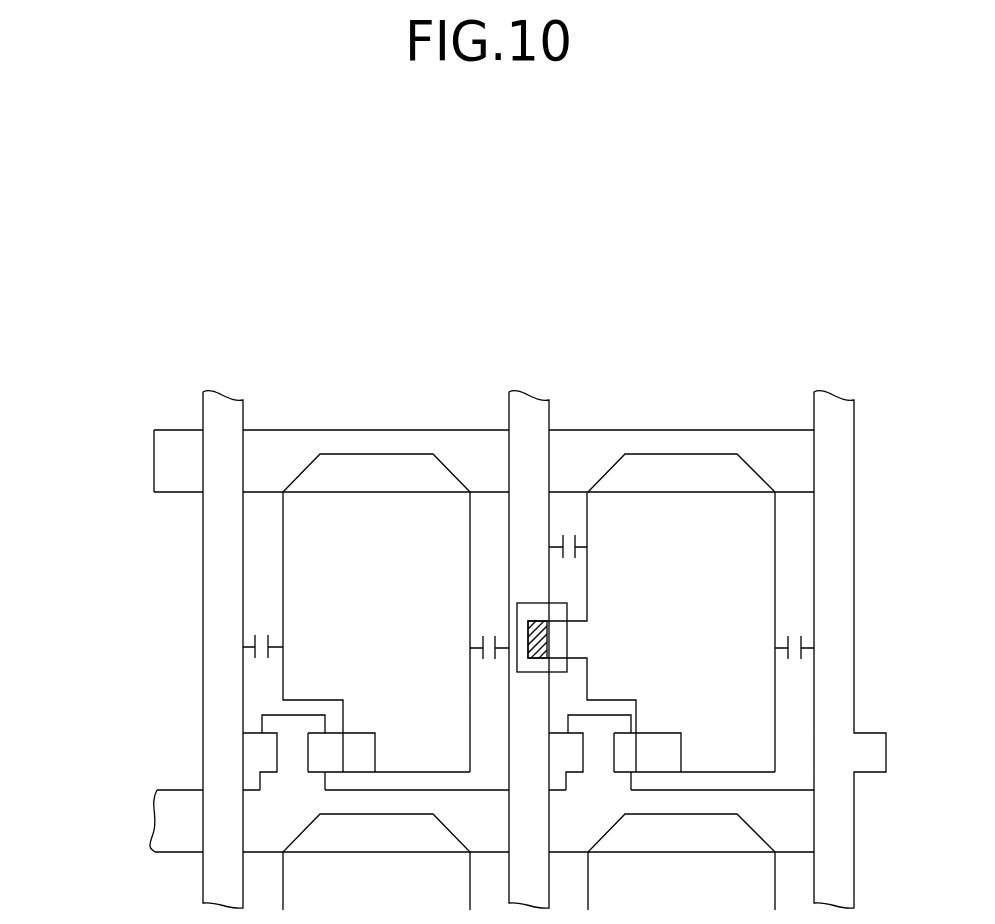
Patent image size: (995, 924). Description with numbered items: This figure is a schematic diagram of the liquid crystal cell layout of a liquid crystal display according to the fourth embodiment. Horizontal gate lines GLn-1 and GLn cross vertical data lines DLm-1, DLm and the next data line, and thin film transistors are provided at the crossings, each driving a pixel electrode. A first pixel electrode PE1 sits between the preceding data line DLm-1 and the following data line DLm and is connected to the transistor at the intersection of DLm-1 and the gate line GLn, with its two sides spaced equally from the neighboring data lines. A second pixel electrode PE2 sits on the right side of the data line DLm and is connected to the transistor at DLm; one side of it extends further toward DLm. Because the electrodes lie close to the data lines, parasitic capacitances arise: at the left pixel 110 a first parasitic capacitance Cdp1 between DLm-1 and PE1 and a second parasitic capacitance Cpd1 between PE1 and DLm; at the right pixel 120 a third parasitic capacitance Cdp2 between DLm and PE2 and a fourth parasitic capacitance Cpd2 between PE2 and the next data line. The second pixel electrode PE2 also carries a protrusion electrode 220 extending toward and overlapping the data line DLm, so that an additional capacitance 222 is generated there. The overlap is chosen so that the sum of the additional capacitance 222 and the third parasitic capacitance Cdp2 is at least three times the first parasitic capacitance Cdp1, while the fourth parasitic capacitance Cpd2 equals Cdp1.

The left pixel 110 is at (356, 623).
The right pixel 120 is at (651, 623).
The protrusion electrode 220 is at (580, 643).
The additional capacitance 222 is at (568, 604).
The first pixel electrode PE1 is at (376, 613).
The second pixel electrode PE2 is at (651, 613).
The first parasitic capacitance Cdp1 is at (251, 658).
The second parasitic capacitance Cpd1 is at (481, 660).
The third parasitic capacitance Cdp2 is at (576, 548).
The fourth parasitic capacitance Cpd2 is at (787, 660).
The gate line GLn-1 is at (421, 461).
The gate line GLn is at (439, 821).
The (m−1)th data line DLm-1 is at (230, 626).
The mth data line DLm is at (530, 627).